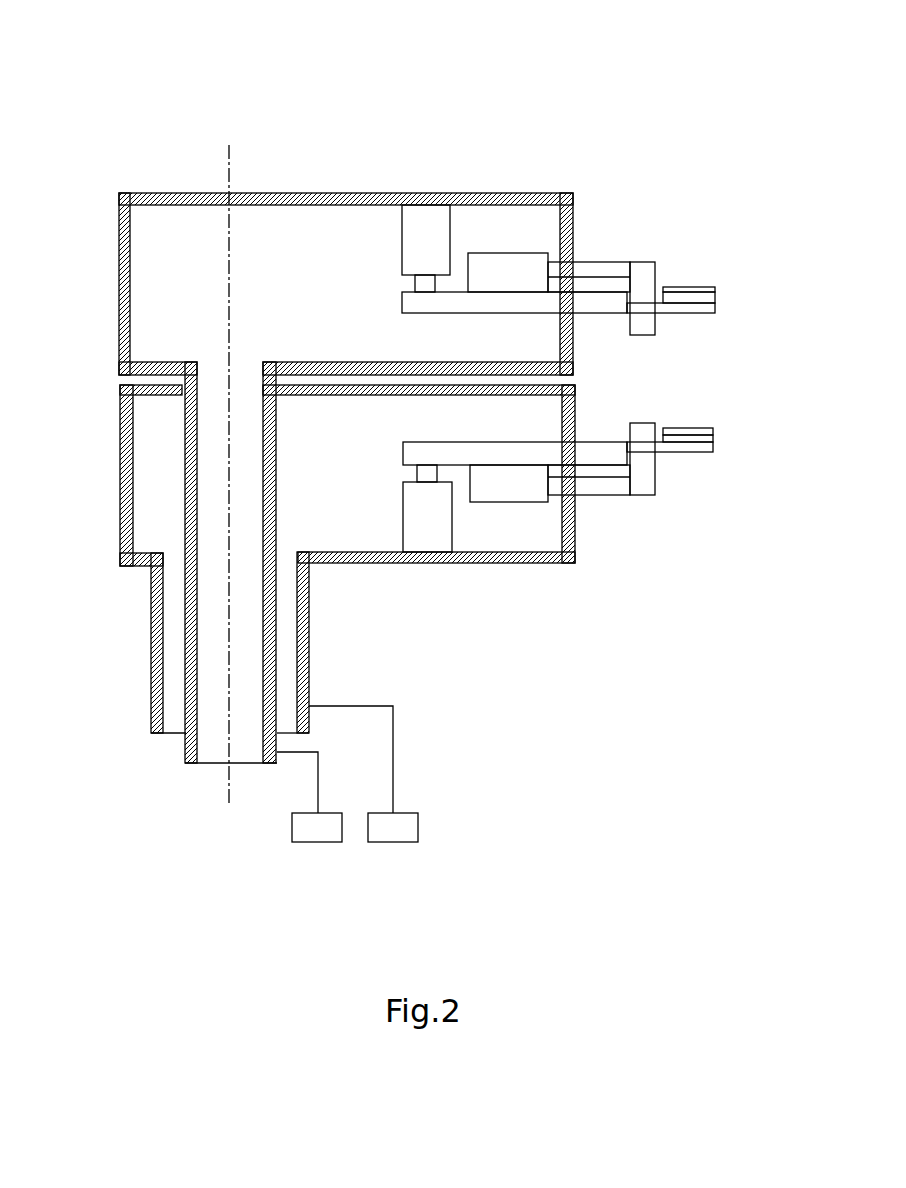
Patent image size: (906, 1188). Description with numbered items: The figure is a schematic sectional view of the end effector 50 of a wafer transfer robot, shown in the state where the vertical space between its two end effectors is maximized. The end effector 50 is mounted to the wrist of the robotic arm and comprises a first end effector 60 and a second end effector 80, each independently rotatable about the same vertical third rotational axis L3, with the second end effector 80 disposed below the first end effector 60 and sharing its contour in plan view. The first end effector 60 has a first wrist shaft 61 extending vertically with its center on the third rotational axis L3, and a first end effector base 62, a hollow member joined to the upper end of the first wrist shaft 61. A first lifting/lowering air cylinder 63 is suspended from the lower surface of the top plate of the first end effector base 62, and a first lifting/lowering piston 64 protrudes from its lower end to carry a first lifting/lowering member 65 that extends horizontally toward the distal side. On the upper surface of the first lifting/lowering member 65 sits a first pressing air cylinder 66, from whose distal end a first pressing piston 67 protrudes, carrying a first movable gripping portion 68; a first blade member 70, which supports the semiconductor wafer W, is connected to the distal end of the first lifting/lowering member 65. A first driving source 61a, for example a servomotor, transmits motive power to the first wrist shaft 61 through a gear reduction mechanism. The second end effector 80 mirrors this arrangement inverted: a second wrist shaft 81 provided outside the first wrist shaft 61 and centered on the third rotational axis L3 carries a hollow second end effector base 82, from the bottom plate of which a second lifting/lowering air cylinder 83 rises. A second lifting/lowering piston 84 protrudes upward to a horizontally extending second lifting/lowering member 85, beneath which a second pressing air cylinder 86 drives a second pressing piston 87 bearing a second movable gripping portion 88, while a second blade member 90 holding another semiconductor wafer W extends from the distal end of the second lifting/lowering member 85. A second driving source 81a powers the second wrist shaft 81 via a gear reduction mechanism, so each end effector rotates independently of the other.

The end effector 50 is at (52, 32).
The third rotational axis L3 is at (228, 157).
The first end effector 60 is at (722, 178).
The first wrist shaft 61 is at (191, 765).
The first driving source 61a is at (305, 843).
The first end effector base 62 is at (375, 192).
The first lifting/lowering air cylinder 63 is at (402, 238).
The first lifting/lowering piston 64 is at (415, 283).
The first lifting/lowering member 65 is at (495, 313).
The first pressing air cylinder 66 is at (500, 253).
The first pressing piston 67 is at (597, 262).
The first movable gripping portion 68 is at (642, 262).
The first blade member 70 is at (715, 308).
The semiconductor wafer W is at (682, 287).
The second end effector 80 is at (722, 578).
The second wrist shaft 81 is at (157, 735).
The second driving source 81a is at (383, 843).
The second end effector base 82 is at (377, 563).
The second lifting/lowering air cylinder 83 is at (403, 515).
The second lifting/lowering piston 84 is at (417, 475).
The second lifting/lowering member 85 is at (497, 442).
The second pressing air cylinder 86 is at (500, 502).
The second pressing piston 87 is at (598, 497).
The second movable gripping portion 88 is at (640, 497).
The second blade member 90 is at (713, 447).